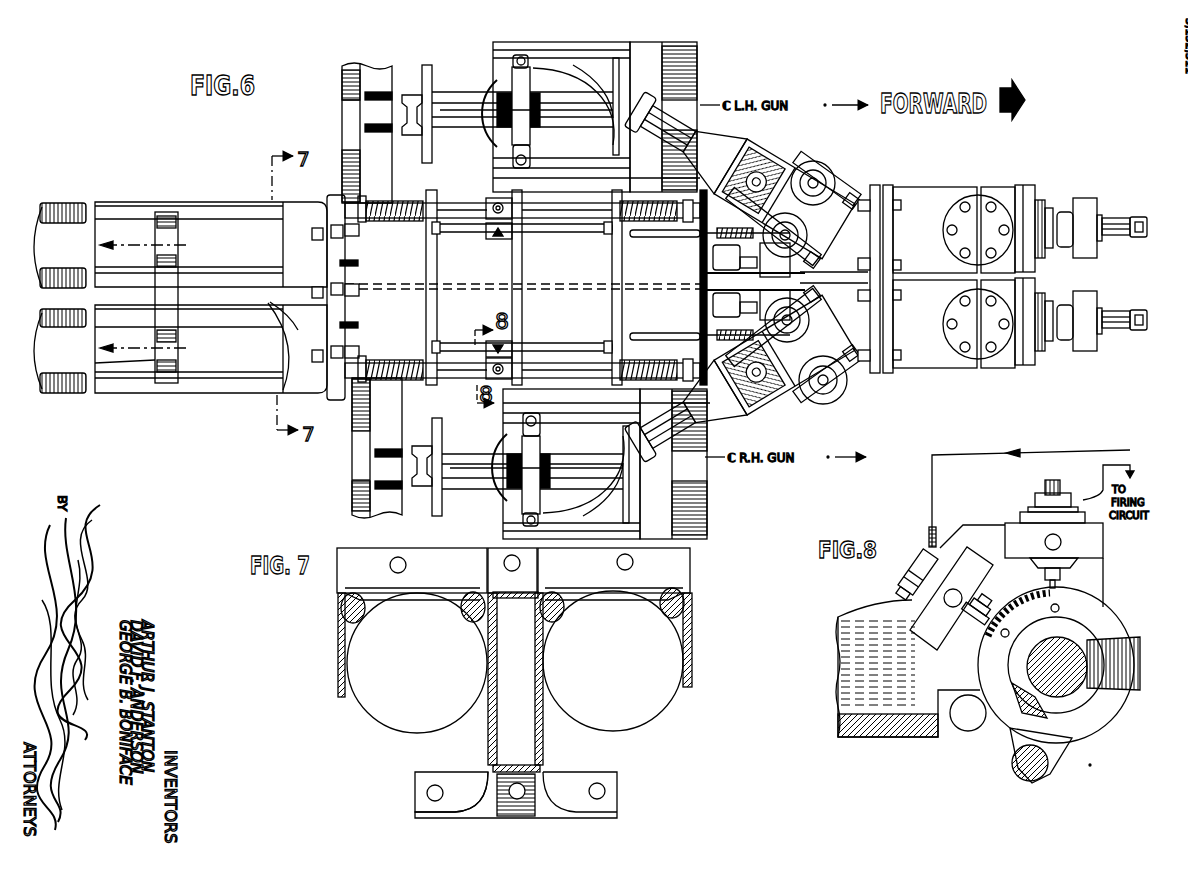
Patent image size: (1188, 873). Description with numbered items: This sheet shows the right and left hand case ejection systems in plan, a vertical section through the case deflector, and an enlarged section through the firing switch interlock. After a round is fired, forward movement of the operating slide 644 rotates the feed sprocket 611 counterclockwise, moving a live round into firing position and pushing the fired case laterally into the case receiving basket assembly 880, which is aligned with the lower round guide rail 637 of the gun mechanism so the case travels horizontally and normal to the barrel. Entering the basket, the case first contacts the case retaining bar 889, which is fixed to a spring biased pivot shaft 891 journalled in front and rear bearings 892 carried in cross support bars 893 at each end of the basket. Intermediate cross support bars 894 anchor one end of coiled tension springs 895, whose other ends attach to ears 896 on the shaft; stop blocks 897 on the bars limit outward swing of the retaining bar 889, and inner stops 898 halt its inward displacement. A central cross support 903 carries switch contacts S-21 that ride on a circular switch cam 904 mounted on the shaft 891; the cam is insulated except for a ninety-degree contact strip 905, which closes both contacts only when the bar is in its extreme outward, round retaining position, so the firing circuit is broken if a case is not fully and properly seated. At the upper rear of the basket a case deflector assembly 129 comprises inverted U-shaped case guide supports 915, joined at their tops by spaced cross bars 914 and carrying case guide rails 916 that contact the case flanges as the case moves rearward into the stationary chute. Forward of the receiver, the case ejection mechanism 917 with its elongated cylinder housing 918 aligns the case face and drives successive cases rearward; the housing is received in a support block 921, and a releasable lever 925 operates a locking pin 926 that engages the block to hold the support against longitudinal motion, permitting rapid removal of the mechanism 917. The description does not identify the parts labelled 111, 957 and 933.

In FIG. 6, the case deflector assembly 129 is at (226, 393).
In FIG. 7, the case deflector assembly 129 is at (697, 610).
In FIG. 6, the case guide supports 915 is at (273, 339).
In FIG. 7, the case guide supports 915 is at (672, 585).
In FIG. 6, the cross bars 914 is at (130, 362).
In FIG. 6, the case receiving basket assembly 880 is at (332, 222).
In FIG. 6, the case retaining bar 889 is at (476, 204).
In FIG. 8, the case retaining bar 889 is at (1013, 757).
In FIG. 6, the coiled tension springs 895 is at (398, 222).
In FIG. 6, the stop blocks 897 is at (423, 395).
In FIG. 6, the pivot shaft 891 is at (548, 210).
In FIG. 8, the pivot shaft 891 is at (1075, 650).
In FIG. 6, the cross support bars 894 is at (437, 250).
In FIG. 6, the cross support 903 is at (521, 249).
In FIG. 8, the cross support 903 is at (1103, 563).
In FIG. 6, the switch contacts S-21 is at (516, 344).
In FIG. 8, the switch contacts S-21 is at (1060, 590).
In FIG. 6, the inner stops 898 is at (606, 233).
In FIG. 6, the cross support bars 893 is at (345, 310).
In FIG. 6, the ears 896 is at (688, 346).
In FIG. 6, the bearings 892 is at (392, 383).
In FIG. 6, the operating slide 644 is at (490, 150).
In FIG. 6, the lower round guide rail 637 is at (345, 74).
In FIG. 6, the feed sprocket 611 is at (467, 97).
In FIG. 6, the lever 925 is at (778, 405).
In FIG. 6, the locking pin 926 is at (795, 342).
In FIG. 6, the roller 957 is at (836, 395).
In FIG. 6, the link bar 111 is at (838, 158).
In FIG. 6, the support block 921 is at (840, 285).
In FIG. 6, the cylinder housing 918 is at (920, 362).
In FIG. 6, the case ejection mechanism 917 is at (955, 352).
In FIG. 6, the drive shaft assembly 933 is at (1072, 344).
In FIG. 7, the case guide rails 916 is at (660, 605).
In FIG. 8, the switch cam 904 is at (1100, 615).
In FIG. 8, the contact strip 905 is at (1024, 602).